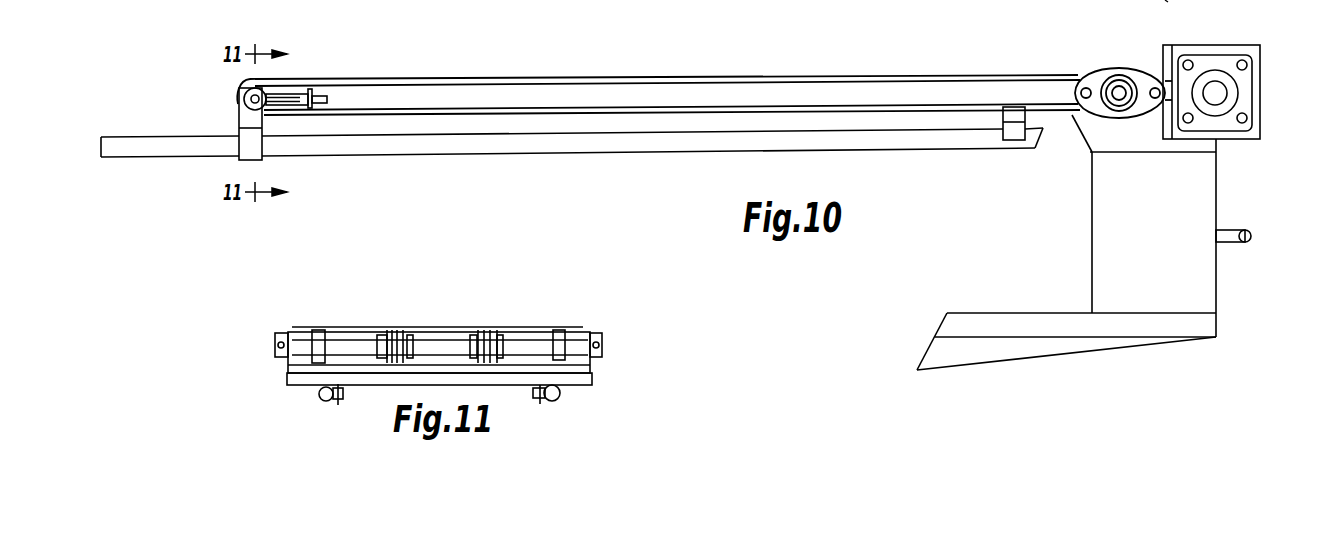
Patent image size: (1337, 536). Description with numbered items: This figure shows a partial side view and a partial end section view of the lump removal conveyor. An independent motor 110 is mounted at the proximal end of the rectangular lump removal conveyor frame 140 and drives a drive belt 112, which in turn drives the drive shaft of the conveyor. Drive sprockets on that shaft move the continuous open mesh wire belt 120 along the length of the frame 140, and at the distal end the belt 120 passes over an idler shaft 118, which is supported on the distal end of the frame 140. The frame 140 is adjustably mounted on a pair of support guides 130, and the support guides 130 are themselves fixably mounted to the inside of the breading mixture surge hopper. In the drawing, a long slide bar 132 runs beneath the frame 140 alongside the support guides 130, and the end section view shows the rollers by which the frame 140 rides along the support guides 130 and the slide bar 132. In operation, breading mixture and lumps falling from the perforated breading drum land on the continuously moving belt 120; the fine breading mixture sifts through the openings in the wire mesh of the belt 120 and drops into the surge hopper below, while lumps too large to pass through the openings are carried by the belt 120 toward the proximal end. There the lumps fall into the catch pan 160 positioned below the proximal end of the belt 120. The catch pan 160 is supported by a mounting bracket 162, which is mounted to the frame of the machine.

In FIG. 10, the independent motor 110 is at (1240, 99).
In FIG. 10, the drive belt 112 is at (1165, 0).
In FIG. 10, the idler shaft 118 is at (237, 113).
In FIG. 11, the idler shaft 118 is at (522, 343).
In FIG. 10, the open mesh wire belt 120 is at (537, 77).
In FIG. 11, the open mesh wire belt 120 is at (357, 360).
In FIG. 10, the support guides 130 is at (683, 147).
In FIG. 11, the support guides 130 is at (317, 388).
In FIG. 10, the slide bar 132 is at (172, 157).
In FIG. 11, the slide bar 132 is at (558, 388).
In FIG. 10, the lump removal conveyor frame 140 is at (768, 93).
In FIG. 10, the catch pan 160 is at (1185, 190).
In FIG. 10, the mounting bracket 162 is at (1033, 348).